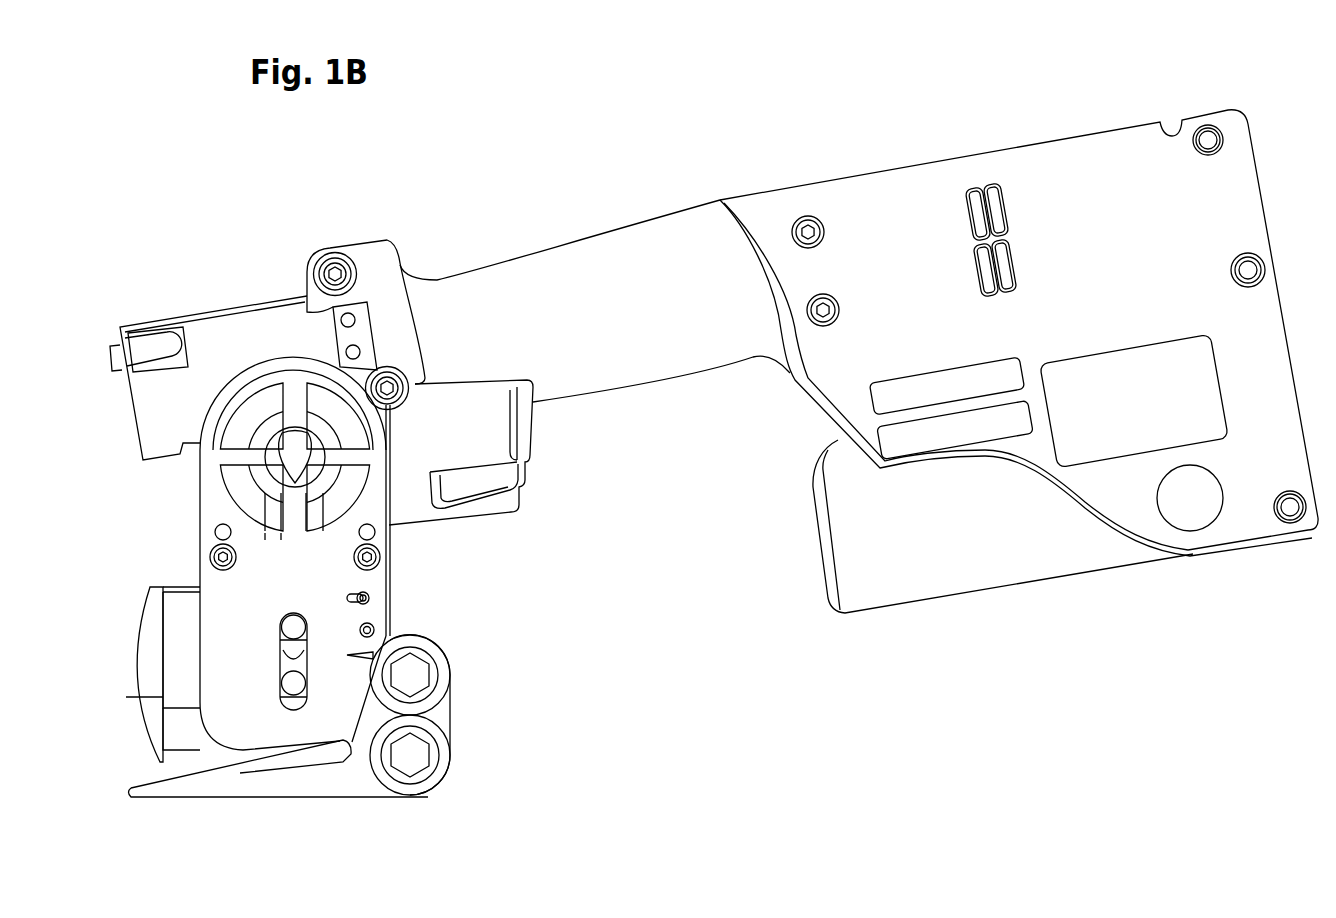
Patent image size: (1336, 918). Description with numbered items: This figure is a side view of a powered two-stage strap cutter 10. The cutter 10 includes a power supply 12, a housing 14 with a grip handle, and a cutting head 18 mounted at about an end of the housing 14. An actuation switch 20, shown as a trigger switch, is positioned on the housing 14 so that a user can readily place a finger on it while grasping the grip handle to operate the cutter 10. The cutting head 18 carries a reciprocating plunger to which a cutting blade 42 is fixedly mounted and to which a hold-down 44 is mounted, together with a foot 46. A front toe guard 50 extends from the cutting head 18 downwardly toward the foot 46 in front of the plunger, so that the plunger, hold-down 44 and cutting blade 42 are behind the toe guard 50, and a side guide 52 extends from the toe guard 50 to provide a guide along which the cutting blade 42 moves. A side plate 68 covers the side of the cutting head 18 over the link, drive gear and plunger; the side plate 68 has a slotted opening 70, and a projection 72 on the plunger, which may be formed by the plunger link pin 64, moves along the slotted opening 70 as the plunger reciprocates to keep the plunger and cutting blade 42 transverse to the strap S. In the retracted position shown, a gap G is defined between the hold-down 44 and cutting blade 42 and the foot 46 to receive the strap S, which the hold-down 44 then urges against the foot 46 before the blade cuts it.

The cutter 10 is at (652, 208).
The power supply 12 is at (1008, 588).
The housing 14 is at (892, 165).
The cutting head 18 is at (400, 567).
The actuation switch 20 is at (519, 500).
The cutting blade 42 is at (180, 620).
The hold-down 44 is at (173, 723).
The foot 46 is at (280, 785).
The front toe guard 50 is at (133, 720).
The side guide 52 is at (182, 582).
The plunger link pin 64 is at (300, 628).
The side plate 68 is at (373, 598).
The slotted opening 70 is at (282, 635).
The projection 72 is at (297, 645).
The gap G is at (250, 758).
The strap S is at (307, 753).